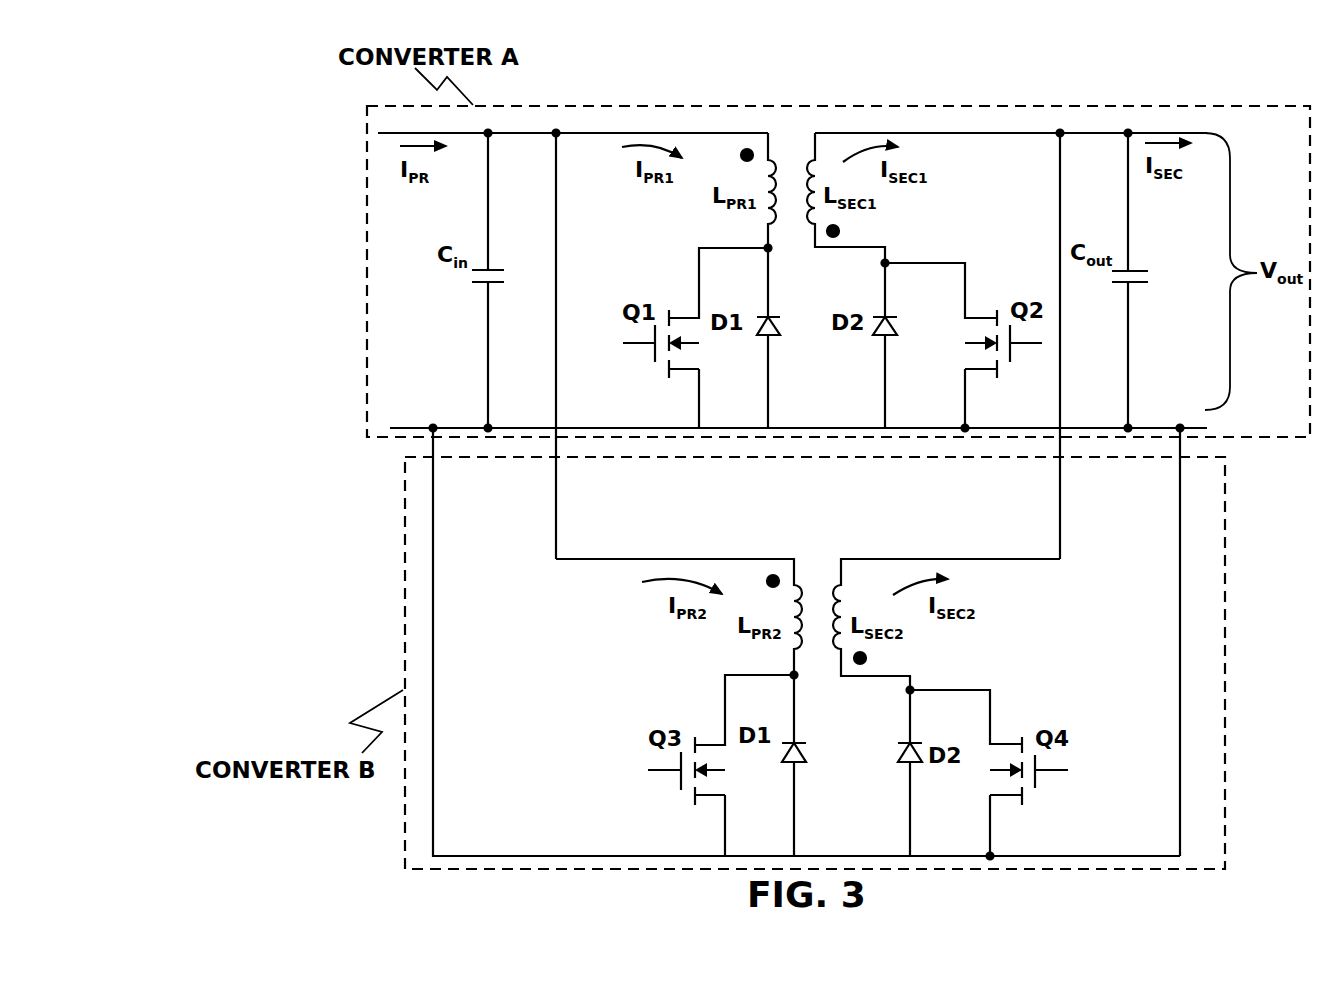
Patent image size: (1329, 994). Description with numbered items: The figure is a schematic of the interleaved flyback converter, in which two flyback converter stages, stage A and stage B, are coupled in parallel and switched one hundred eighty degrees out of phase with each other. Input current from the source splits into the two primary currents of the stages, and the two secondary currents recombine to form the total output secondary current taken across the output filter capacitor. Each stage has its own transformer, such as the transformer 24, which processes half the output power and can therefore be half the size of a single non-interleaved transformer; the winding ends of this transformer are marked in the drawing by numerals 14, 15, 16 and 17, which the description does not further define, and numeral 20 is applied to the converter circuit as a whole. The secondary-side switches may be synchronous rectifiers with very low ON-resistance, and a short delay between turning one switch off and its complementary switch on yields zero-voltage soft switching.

The secondary winding first terminal 14 is at (825, 143).
The primary winding first terminal 15 is at (748, 140).
The primary winding second terminal 16 is at (753, 238).
The secondary winding second terminal 17 is at (860, 233).
The power converter circuit 20 is at (940, 90).
The transformer 24 is at (793, 172).